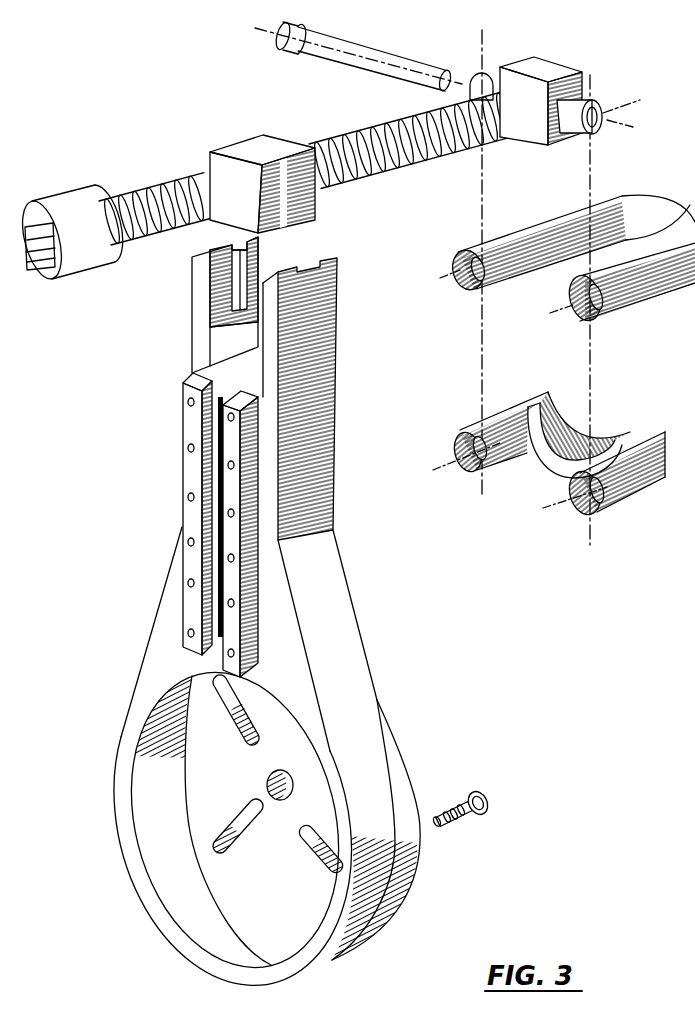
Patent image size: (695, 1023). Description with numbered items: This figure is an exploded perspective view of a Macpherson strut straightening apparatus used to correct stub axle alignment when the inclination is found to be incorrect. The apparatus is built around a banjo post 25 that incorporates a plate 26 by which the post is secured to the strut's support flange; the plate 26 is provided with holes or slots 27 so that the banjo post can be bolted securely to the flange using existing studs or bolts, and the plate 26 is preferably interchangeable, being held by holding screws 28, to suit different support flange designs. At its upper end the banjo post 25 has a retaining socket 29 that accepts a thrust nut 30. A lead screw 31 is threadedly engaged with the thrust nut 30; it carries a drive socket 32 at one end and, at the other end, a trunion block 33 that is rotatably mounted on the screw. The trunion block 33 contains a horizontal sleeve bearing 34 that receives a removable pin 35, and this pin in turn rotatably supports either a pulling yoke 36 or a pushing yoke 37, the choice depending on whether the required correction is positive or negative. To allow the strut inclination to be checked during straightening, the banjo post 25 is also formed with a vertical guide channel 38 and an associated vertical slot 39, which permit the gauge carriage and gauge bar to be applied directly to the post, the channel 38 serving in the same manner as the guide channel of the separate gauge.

The banjo post 25 is at (251, 624).
The plate 26 is at (393, 748).
The holes or slots 27 is at (240, 820).
The holding screws 28 is at (455, 817).
The retaining socket 29 is at (217, 293).
The thrust nut 30 is at (263, 150).
The lead screw 31 is at (153, 200).
The drive socket 32 is at (65, 221).
The trunion block 33 is at (536, 66).
The horizontal sleeve bearing 34 is at (581, 100).
The removable pin 35 is at (342, 60).
The pulling yoke 36 is at (633, 217).
The pushing yoke 37 is at (603, 447).
The vertical guide channel 38 is at (190, 468).
The vertical slot 39 is at (220, 507).